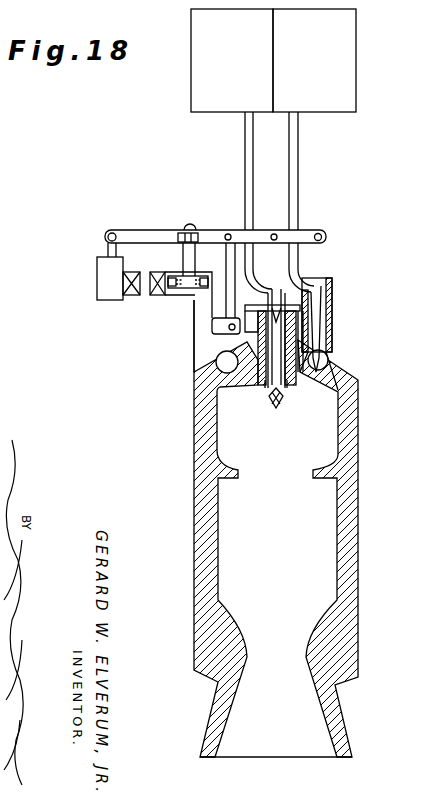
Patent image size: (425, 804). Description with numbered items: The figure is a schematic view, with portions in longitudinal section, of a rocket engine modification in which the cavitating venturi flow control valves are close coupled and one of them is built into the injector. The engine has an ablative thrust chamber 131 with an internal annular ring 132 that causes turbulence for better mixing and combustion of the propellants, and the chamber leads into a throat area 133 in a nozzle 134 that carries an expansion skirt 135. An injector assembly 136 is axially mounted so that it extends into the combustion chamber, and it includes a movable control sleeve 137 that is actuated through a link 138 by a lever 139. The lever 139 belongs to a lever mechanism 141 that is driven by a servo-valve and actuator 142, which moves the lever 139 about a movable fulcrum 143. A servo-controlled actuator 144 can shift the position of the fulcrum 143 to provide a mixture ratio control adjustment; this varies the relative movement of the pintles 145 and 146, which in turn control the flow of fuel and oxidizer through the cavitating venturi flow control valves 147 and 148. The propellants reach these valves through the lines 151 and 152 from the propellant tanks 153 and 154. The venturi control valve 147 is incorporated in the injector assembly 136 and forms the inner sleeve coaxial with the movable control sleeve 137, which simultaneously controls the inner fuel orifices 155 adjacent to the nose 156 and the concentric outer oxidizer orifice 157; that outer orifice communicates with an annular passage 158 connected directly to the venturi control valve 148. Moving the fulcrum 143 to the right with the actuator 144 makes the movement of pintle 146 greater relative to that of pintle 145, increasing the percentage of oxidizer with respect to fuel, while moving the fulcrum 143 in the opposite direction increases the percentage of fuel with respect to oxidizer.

The ablative thrust chamber 131 is at (355, 422).
The internal annular ring 132 is at (318, 479).
The throat area 133 is at (274, 658).
The nozzle 134 is at (194, 668).
The expansion skirt 135 is at (201, 738).
The injector assembly 136 is at (272, 458).
The movable control sleeve 137 is at (286, 383).
The link 138 is at (226, 304).
The lever 139 is at (150, 231).
The lever mechanism 141 is at (204, 216).
The servo-valve and actuator 142 is at (97, 283).
The movable fulcrum 143 is at (184, 232).
The servo-controlled actuator 144 is at (156, 293).
The pintle 145 is at (272, 258).
The pintle 146 is at (323, 271).
The cavitating venturi flow control valve 147 is at (236, 342).
The cavitating venturi flow control valve 148 is at (315, 331).
The line 151 is at (245, 139).
The line 152 is at (298, 139).
The propellant tank 153 is at (250, 71).
The propellant tank 154 is at (335, 71).
The inner fuel orifices 155 is at (262, 391).
The nose 156 is at (278, 406).
The outer oxidizer orifice 157 is at (262, 389).
The annular passage 158 is at (323, 363).